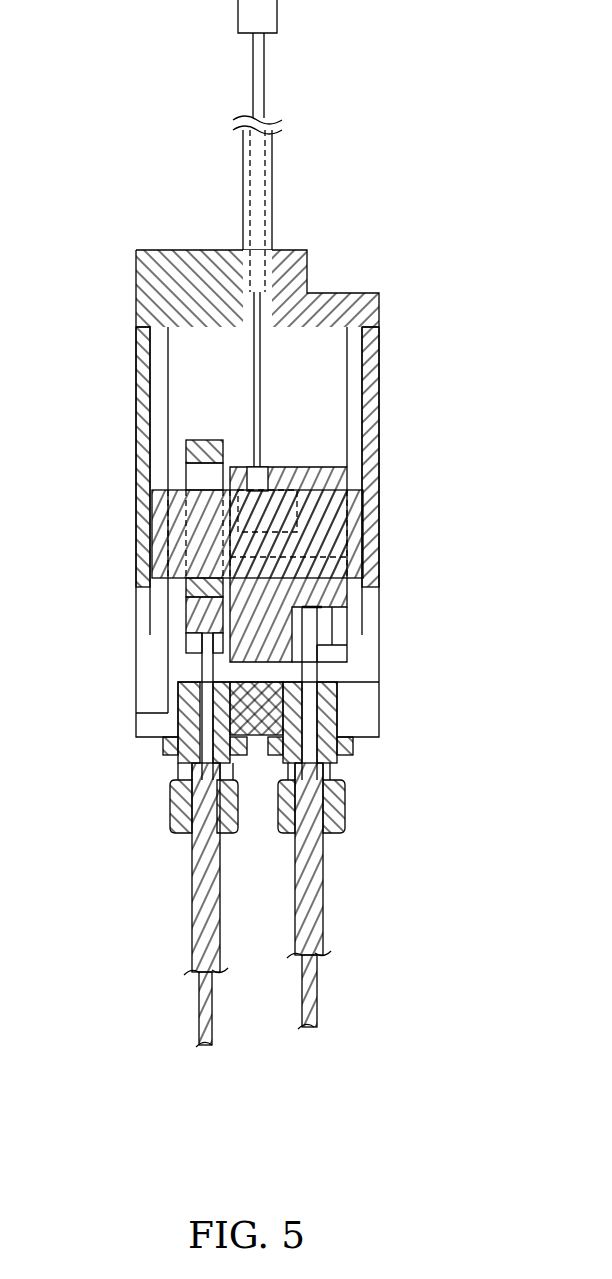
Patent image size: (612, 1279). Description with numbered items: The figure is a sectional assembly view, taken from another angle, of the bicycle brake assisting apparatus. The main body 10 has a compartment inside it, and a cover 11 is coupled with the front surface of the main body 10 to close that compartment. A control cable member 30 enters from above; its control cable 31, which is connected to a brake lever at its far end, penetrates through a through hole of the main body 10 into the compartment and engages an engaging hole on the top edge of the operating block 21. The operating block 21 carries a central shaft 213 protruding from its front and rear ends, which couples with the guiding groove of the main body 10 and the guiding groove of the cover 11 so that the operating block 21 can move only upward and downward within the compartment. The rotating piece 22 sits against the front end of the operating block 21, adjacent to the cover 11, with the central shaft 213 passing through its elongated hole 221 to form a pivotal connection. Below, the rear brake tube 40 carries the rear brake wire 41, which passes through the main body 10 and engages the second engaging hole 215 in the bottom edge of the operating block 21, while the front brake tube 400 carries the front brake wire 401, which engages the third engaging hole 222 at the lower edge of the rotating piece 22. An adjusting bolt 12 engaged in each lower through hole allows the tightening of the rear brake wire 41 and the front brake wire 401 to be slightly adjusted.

The main body 10 is at (340, 297).
The cover 11 is at (137, 366).
The adjusting bolt 12 is at (330, 718).
The operating block 21 is at (330, 467).
The rotating piece 22 is at (199, 465).
The control cable member 30 is at (240, 180).
The control cable 31 is at (252, 325).
The rear brake tube 40 is at (327, 892).
The rear brake wire 41 is at (320, 673).
The central shaft 213 is at (153, 505).
The second engaging hole 215 is at (325, 603).
The elongated hole 221 is at (187, 476).
The third engaging hole 222 is at (187, 580).
The front brake tube 400 is at (190, 897).
The front brake wire 401 is at (207, 663).